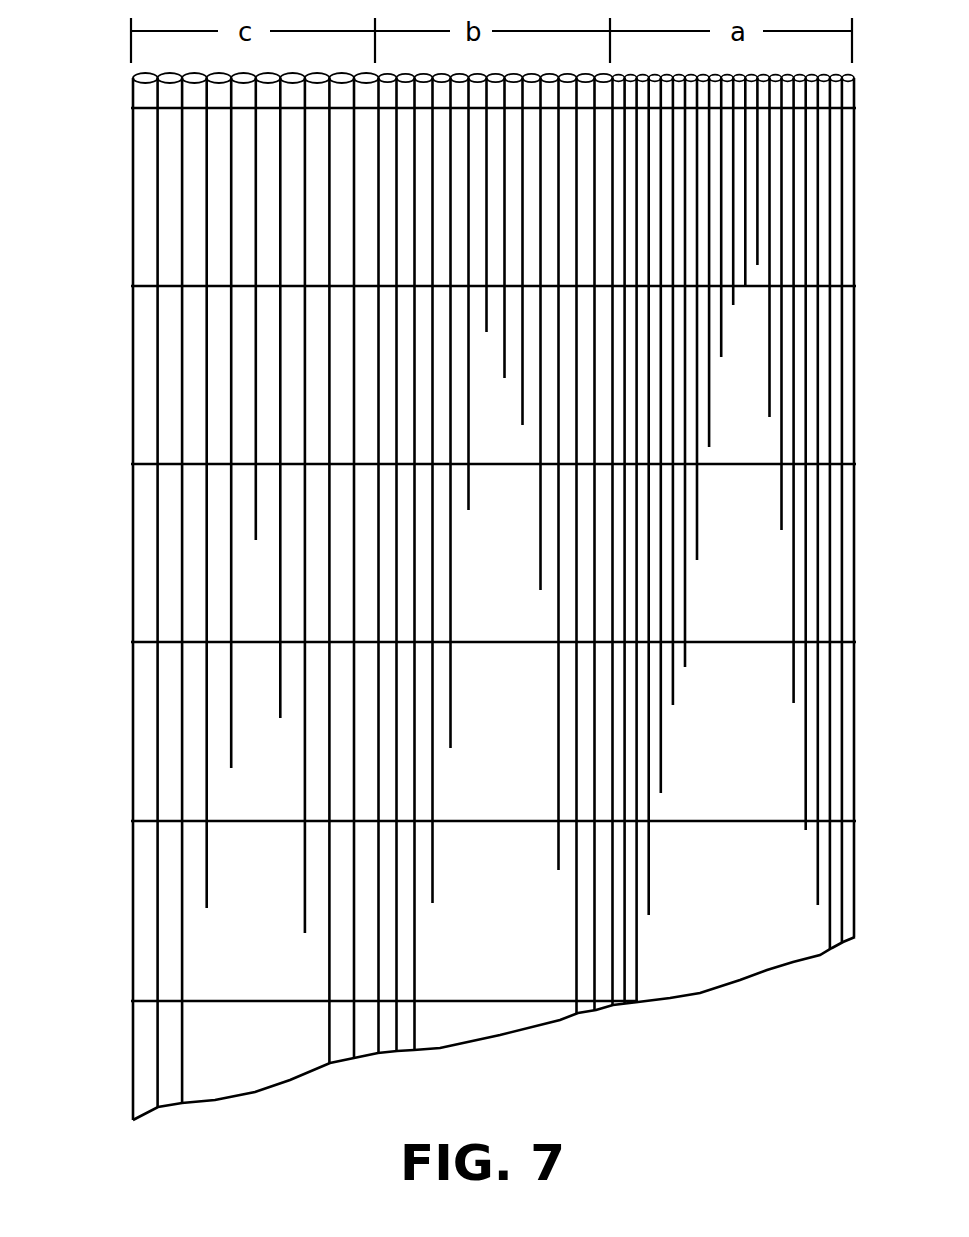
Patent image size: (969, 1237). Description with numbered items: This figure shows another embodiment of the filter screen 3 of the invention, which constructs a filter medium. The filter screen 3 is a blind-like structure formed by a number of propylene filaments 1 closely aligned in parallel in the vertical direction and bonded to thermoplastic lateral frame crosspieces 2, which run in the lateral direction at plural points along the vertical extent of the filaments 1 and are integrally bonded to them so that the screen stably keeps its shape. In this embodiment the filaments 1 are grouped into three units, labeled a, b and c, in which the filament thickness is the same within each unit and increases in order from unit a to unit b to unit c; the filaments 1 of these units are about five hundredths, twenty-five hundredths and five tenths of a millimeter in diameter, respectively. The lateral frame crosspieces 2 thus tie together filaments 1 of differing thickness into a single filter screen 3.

The filaments 1 is at (823, 203).
The lateral frame crosspieces 2 is at (766, 463).
The filter screen 3 is at (122, 385).